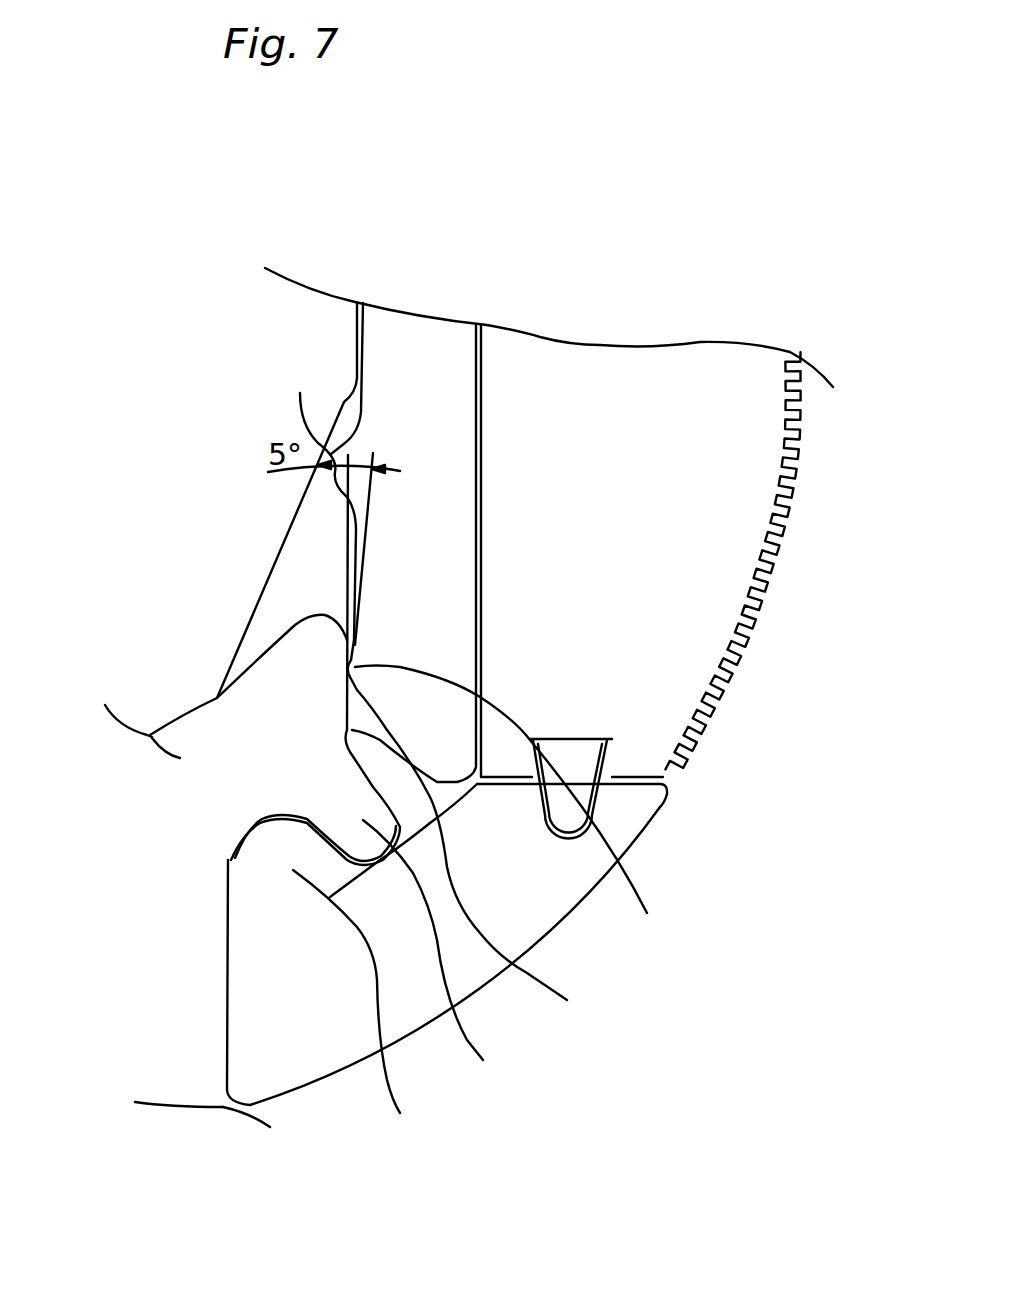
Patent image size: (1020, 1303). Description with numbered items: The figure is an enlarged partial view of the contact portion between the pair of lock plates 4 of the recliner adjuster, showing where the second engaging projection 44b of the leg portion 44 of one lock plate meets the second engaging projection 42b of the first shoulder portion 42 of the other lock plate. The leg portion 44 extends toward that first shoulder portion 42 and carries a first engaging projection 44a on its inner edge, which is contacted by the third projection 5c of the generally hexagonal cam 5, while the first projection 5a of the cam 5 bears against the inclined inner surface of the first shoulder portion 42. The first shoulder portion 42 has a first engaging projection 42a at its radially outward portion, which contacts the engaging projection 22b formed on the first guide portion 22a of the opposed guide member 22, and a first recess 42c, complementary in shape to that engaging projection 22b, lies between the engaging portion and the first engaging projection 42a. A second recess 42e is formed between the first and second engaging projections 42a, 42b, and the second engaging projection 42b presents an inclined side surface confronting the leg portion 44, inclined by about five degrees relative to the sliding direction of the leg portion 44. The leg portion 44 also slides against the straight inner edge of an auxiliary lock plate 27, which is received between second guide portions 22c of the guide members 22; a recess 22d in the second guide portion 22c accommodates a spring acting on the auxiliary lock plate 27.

The lock plate 4 is at (163, 1025).
The cam 5 is at (253, 347).
The first projection 5a is at (172, 707).
The third projection 5c is at (350, 350).
The guide member 22 is at (420, 1032).
The first guide portion 22a is at (323, 1000).
The engaging projection 22b is at (364, 1010).
The second guide portion 22c is at (627, 817).
The recess 22d is at (570, 837).
The auxiliary lock plate 27 is at (657, 653).
The first shoulder portion 42 is at (237, 773).
The first engaging projection 42a is at (453, 950).
The second engaging projection 42b is at (305, 657).
The first recess 42c is at (262, 823).
The second recess 42e is at (486, 838).
The leg portion 44 is at (428, 348).
The first engaging projection 44a is at (300, 393).
The second engaging projection 44b is at (530, 800).